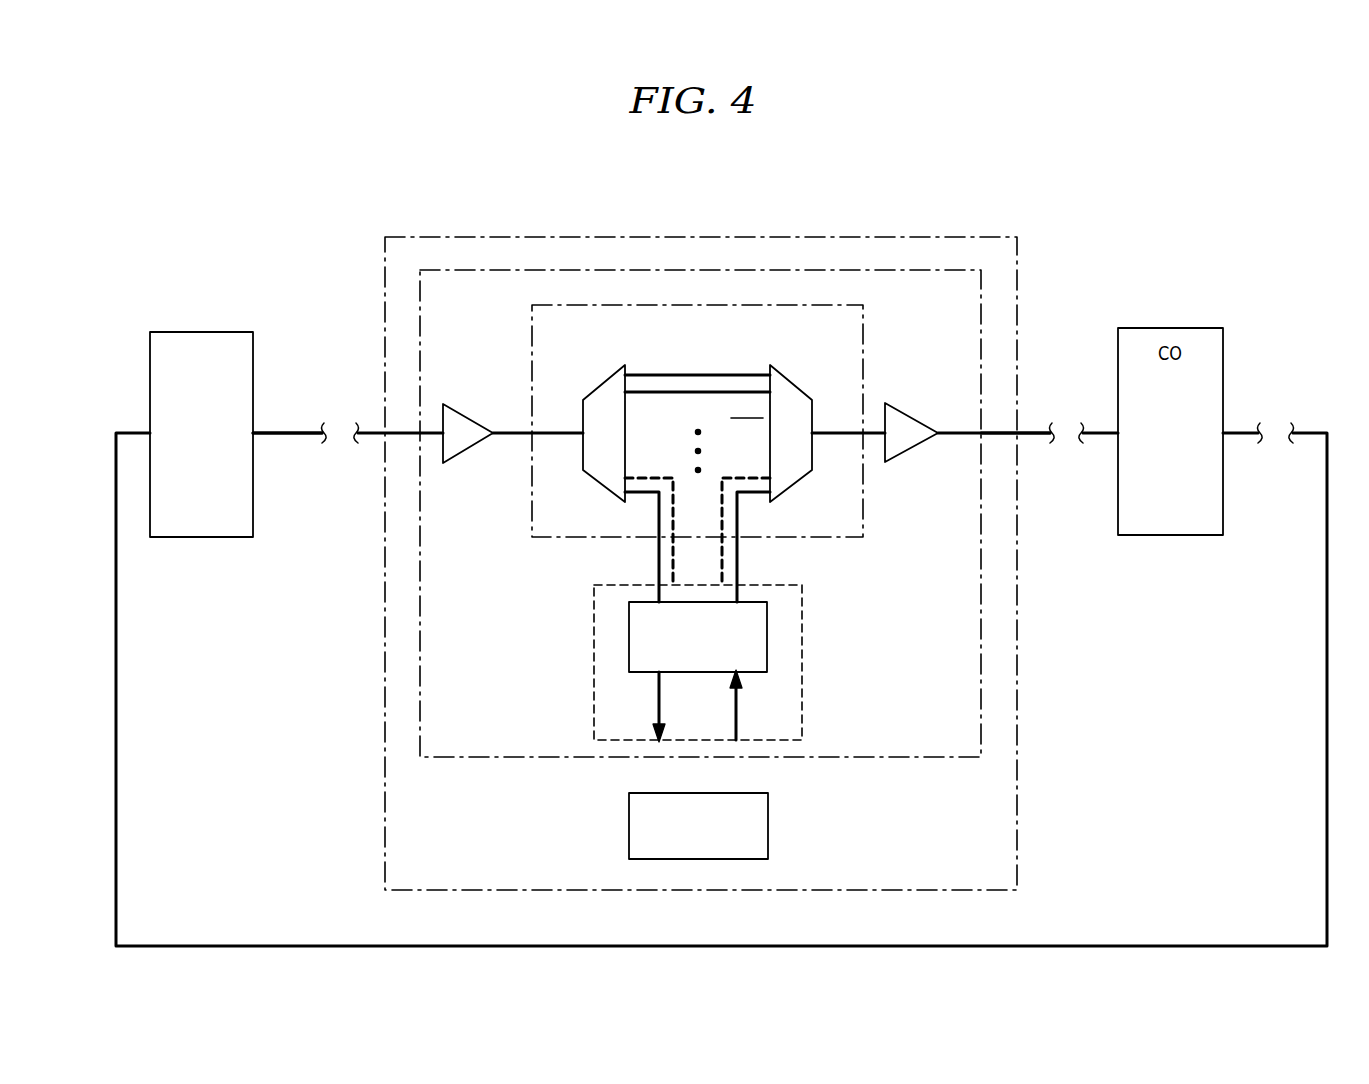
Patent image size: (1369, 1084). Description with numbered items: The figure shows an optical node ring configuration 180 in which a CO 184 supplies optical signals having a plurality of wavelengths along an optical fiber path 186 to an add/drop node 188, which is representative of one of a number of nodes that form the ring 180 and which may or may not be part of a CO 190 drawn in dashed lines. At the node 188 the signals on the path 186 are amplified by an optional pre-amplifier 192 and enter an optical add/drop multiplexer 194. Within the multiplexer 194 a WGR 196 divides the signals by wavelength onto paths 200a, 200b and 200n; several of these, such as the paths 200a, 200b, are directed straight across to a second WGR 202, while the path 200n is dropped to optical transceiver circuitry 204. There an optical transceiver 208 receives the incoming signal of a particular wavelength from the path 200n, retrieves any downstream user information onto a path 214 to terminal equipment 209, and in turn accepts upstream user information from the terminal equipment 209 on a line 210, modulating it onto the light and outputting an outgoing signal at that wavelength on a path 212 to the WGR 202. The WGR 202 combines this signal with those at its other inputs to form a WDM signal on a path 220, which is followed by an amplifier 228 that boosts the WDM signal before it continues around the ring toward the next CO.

The optical node ring configuration 180 is at (1046, 252).
The CO 184 is at (203, 332).
The optical fiber path 186 is at (289, 436).
The add/drop node 188 is at (699, 270).
The CO 190 is at (460, 237).
The pre-amplifier 192 is at (480, 418).
The optical add/drop multiplexer 194 is at (864, 327).
The WGR 196 is at (601, 380).
The path 200a is at (699, 374).
The path 200b is at (652, 395).
The path 200n is at (658, 565).
The WGR 202 is at (790, 382).
The optical transceiver circuitry 204 is at (804, 664).
The optical transceiver 208 is at (628, 640).
The terminal equipment 209 is at (629, 829).
The line 210 is at (738, 713).
The path 212 is at (738, 563).
The path 214 is at (657, 713).
The path 220 is at (1031, 430).
The optical amplifier 228 is at (915, 414).